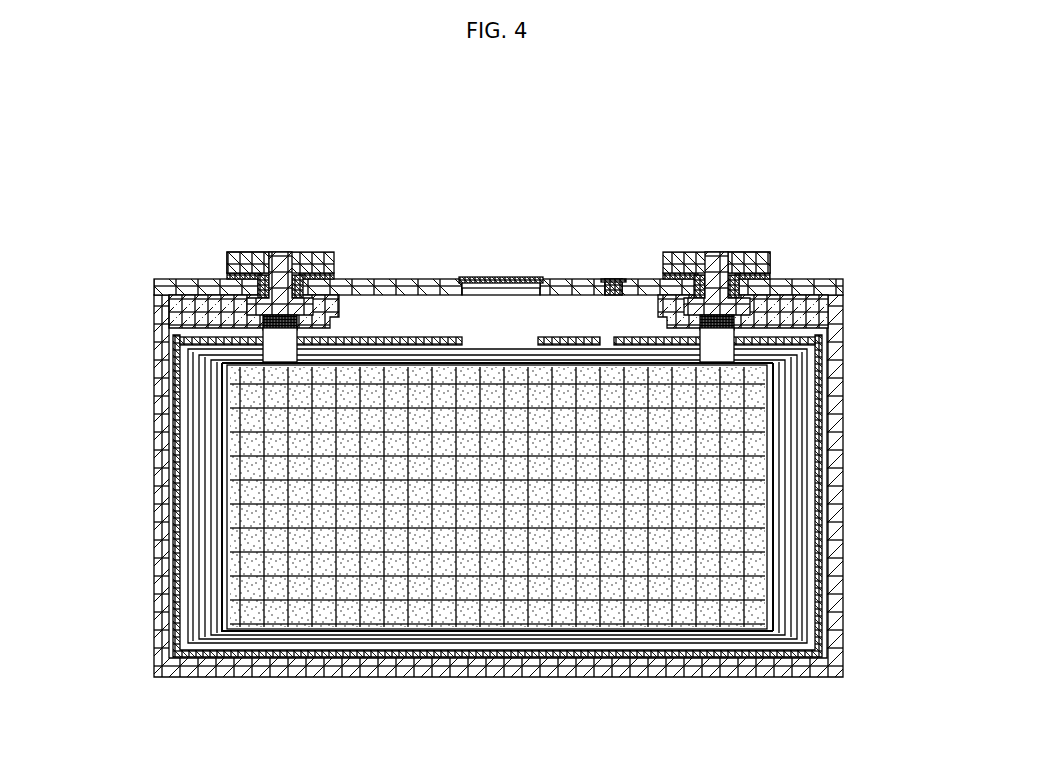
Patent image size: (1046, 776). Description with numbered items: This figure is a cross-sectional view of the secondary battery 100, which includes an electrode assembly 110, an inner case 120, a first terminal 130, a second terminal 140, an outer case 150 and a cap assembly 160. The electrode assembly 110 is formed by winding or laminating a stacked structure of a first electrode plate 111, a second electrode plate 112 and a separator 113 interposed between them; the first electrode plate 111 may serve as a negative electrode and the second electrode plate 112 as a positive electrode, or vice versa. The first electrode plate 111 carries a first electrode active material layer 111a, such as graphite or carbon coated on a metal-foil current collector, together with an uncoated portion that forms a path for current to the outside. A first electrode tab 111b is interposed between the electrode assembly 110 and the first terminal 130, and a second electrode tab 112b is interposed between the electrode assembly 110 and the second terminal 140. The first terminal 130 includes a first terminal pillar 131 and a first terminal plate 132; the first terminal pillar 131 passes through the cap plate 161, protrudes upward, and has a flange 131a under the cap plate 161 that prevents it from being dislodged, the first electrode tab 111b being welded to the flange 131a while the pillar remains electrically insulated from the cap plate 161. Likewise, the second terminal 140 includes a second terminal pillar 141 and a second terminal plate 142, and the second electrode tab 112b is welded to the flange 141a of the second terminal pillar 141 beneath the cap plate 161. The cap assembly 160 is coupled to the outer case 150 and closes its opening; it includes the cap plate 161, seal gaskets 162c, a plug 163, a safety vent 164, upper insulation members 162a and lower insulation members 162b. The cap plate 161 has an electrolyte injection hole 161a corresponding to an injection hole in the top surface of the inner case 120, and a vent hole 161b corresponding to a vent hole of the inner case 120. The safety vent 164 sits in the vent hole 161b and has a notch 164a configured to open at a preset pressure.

The secondary battery 100 is at (118, 162).
The electrode assembly 110 is at (501, 524).
The first electrode plate 111 is at (218, 402).
The first electrode active material layer 111a is at (400, 612).
The first electrode tab 111b is at (273, 343).
The second electrode plate 112 is at (785, 404).
The second electrode tab 112b is at (715, 341).
The separator 113 is at (463, 637).
The inner case 120 is at (180, 496).
The first terminal 130 is at (269, 239).
The first terminal pillar 131 is at (280, 258).
The flange 131a is at (237, 252).
The first terminal plate 132 is at (321, 252).
The second terminal 140 is at (757, 239).
The second terminal pillar 141 is at (717, 258).
The flange 141a is at (790, 258).
The second terminal plate 142 is at (760, 252).
The outer case 150 is at (833, 465).
The cap assembly 160 is at (446, 241).
The cap plate 161 is at (578, 283).
The electrolyte injection hole 161a is at (612, 296).
The vent hole 161b is at (506, 296).
The upper insulation member 162a is at (336, 276).
The lower insulation member 162b is at (183, 303).
The seal gasket 162c is at (300, 292).
The plug 163 is at (617, 279).
The safety vent 164 is at (523, 278).
The notch 164a is at (497, 278).